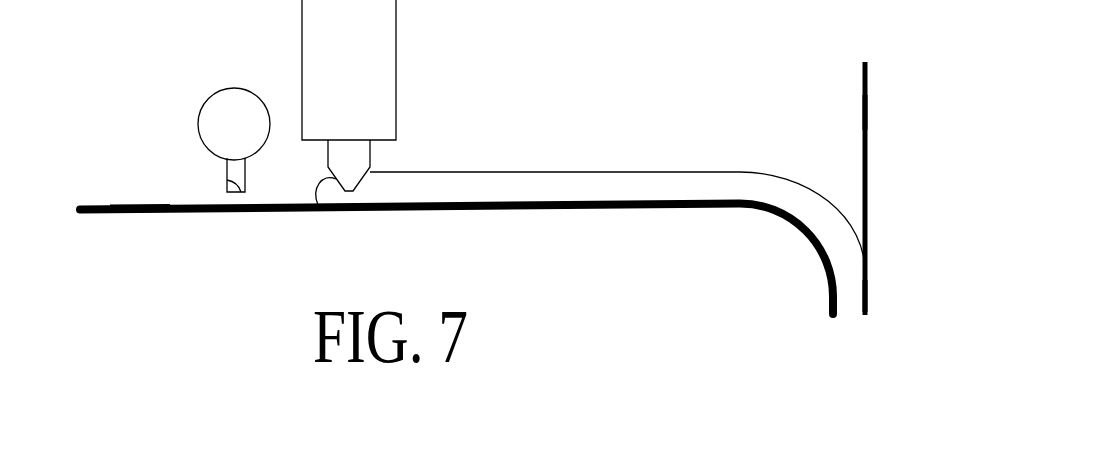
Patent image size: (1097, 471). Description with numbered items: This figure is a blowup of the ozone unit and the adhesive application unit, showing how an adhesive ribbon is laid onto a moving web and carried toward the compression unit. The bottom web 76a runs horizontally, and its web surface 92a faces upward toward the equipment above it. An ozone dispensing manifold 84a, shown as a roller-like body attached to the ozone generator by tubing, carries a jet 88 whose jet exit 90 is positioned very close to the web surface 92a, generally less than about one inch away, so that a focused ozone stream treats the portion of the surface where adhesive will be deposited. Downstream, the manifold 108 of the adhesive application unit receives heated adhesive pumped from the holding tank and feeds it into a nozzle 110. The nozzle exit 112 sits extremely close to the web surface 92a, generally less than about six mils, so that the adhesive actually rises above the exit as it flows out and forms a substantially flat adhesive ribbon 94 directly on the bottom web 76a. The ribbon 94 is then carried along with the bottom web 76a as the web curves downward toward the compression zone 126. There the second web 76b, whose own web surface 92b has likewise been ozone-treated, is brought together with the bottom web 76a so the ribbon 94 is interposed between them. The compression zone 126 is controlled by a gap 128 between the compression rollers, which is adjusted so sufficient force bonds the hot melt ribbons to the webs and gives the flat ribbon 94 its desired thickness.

The bottom web 76a is at (258, 212).
The web 76b is at (868, 168).
The ozone dispensing manifold 84a is at (225, 66).
The jet 88 is at (228, 162).
The jet exit 90 is at (228, 180).
The web surface 92a is at (127, 203).
The web surface 92b is at (866, 124).
The adhesive ribbon 94 is at (488, 187).
The manifold 108 is at (375, 49).
The nozzle 110 is at (370, 155).
The nozzle exit 112 is at (350, 193).
The compression zone 126 is at (880, 297).
The gap 128 is at (853, 342).